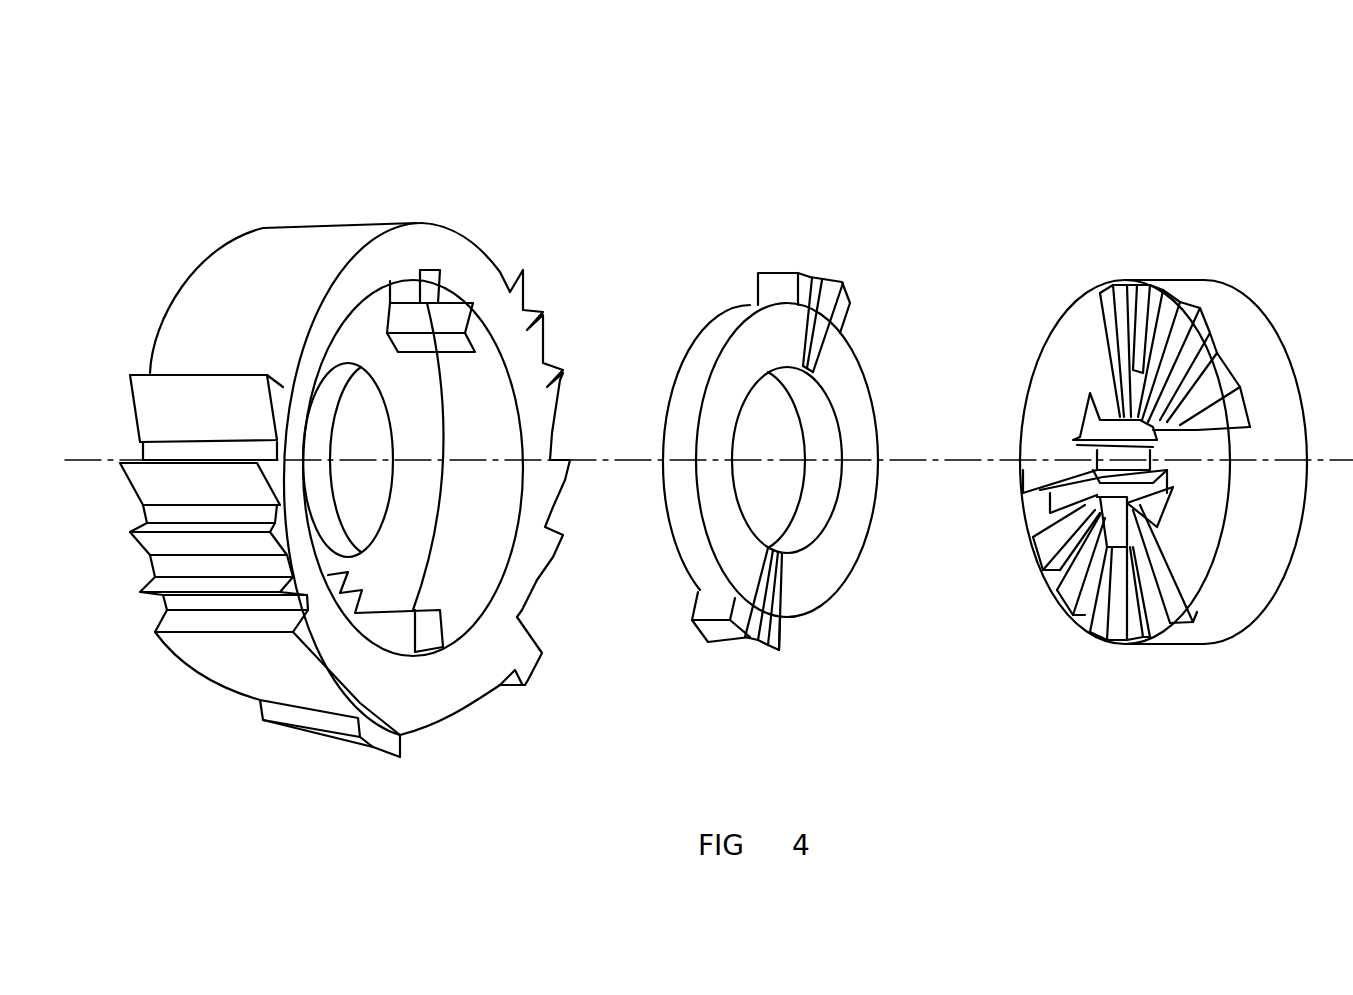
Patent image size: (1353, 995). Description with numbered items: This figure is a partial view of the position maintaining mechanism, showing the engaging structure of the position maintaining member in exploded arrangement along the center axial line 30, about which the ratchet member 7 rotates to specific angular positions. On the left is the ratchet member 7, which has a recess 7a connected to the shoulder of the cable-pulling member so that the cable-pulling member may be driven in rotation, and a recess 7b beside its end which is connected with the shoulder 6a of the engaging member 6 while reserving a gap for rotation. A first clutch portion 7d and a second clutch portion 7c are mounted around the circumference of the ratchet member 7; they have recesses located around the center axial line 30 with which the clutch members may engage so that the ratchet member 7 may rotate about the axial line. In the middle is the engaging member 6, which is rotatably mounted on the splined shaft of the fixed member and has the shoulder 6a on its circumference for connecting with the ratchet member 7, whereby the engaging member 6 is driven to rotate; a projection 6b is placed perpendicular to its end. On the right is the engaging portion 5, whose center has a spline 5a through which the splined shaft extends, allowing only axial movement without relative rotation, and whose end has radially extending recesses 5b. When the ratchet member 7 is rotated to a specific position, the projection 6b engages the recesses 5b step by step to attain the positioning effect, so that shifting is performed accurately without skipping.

The engaging portion 5 is at (1275, 410).
The spline 5a is at (1083, 425).
The recesses 5b is at (1167, 302).
The engaging member 6 is at (832, 566).
The shoulder 6a is at (777, 288).
The projection 6b is at (837, 297).
The ratchet member 7 is at (281, 262).
The recess 7a is at (407, 743).
The recess 7b is at (435, 322).
The second clutch portion 7c is at (200, 420).
The first clutch portion 7d is at (563, 378).
The center axial line 30 is at (957, 462).